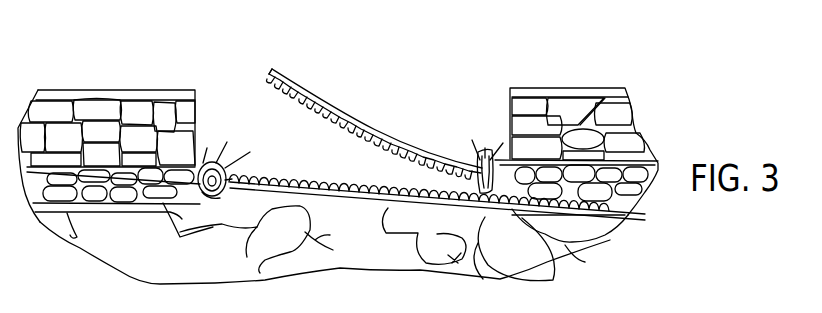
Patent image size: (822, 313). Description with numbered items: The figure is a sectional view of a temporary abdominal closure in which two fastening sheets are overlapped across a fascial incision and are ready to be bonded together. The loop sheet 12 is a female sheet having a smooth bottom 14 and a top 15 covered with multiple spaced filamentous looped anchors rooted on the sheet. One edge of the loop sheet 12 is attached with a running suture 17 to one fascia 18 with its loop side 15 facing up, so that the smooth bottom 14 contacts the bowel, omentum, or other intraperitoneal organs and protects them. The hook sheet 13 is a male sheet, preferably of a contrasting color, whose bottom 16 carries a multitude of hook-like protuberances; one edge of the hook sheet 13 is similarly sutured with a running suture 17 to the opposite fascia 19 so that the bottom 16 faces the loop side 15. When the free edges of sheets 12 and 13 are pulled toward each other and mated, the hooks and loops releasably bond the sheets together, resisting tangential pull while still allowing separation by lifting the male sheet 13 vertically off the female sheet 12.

The loop sheet 12 is at (390, 215).
The hook sheet 13 is at (328, 99).
The smooth bottom 14 is at (327, 181).
The top 15 is at (282, 177).
The bottom 16 is at (272, 70).
The running suture 17 is at (225, 197).
The fascia 18 is at (128, 211).
The opposite fascia 19 is at (612, 237).